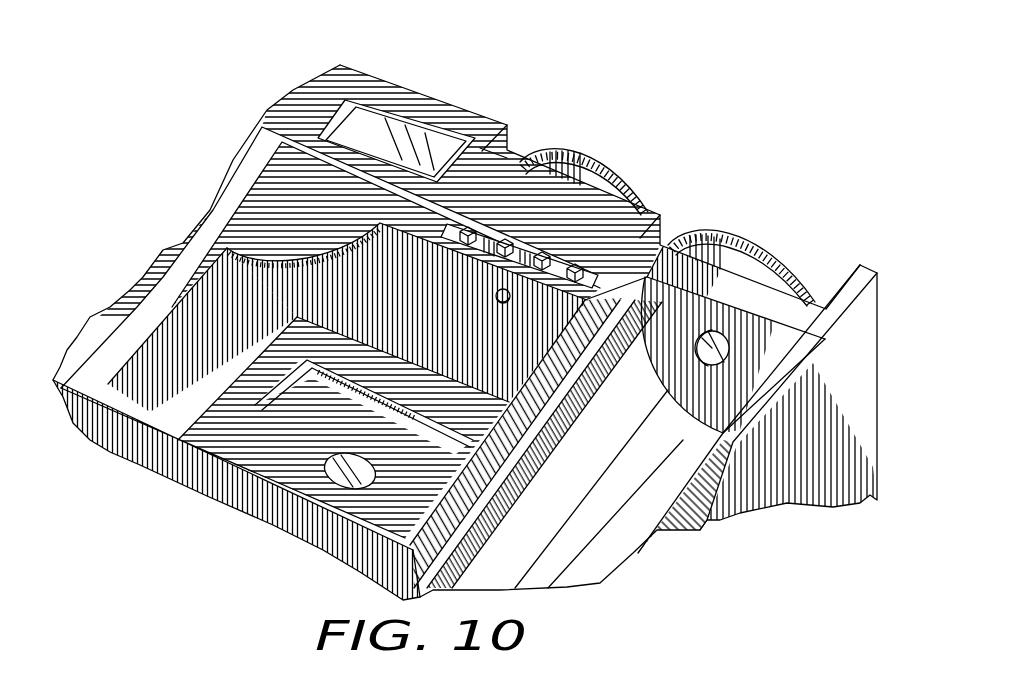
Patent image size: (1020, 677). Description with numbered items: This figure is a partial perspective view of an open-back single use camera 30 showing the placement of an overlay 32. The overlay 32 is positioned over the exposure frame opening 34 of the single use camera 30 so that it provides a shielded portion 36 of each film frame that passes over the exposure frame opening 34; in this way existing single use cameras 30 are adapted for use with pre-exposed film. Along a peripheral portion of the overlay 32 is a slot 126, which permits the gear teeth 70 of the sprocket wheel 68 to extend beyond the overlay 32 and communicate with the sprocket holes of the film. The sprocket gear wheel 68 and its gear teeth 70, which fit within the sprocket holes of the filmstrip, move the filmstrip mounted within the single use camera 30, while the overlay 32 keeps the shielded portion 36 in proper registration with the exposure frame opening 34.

The single use camera 30 is at (677, 165).
The overlay 32 is at (565, 443).
The exposure frame opening 34 is at (178, 398).
The shielded portion 36 is at (270, 232).
The sprocket gear wheel 68 is at (495, 263).
The sprocket wheel gear tooth 70 is at (539, 218).
The slot 126 is at (578, 264).